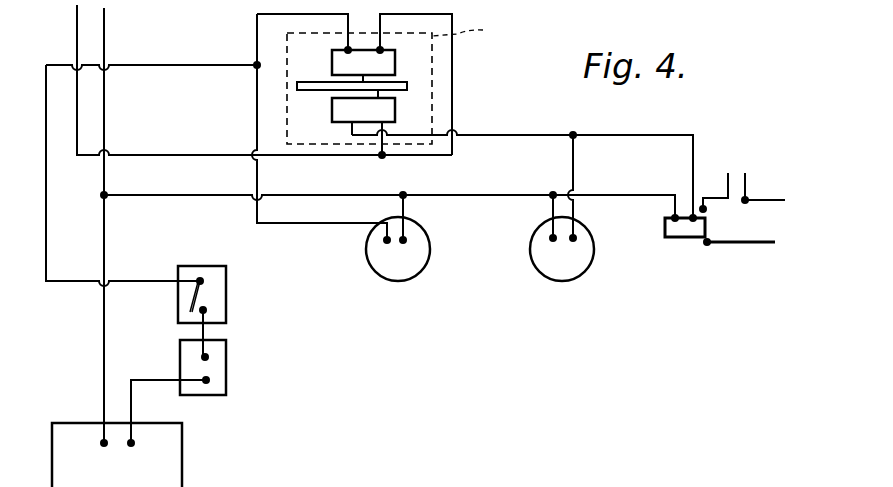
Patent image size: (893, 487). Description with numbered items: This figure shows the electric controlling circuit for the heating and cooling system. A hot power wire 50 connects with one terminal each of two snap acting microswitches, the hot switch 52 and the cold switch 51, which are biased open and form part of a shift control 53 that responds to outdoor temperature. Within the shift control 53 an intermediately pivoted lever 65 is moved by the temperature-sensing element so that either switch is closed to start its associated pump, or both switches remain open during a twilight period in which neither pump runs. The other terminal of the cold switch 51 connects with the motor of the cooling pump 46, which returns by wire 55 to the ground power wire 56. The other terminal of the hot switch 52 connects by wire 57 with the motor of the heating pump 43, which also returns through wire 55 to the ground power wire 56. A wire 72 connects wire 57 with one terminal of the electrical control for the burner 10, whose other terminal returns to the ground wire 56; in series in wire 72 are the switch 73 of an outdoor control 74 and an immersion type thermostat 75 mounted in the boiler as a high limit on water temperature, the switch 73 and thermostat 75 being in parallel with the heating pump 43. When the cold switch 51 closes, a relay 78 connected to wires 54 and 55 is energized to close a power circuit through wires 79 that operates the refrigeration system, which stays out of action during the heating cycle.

The burner 10 is at (180, 471).
The heating pump 43 is at (366, 256).
The cooling pump 46 is at (530, 251).
The hot power wire 50 is at (75, 27).
The cold switch 51 is at (395, 109).
The hot switch 52 is at (395, 63).
The shift control 53 is at (432, 50).
The wire 54 is at (500, 134).
The wire 55 is at (462, 194).
The ground power wire 56 is at (105, 108).
The wire 57 is at (257, 30).
The lever 65 is at (314, 90).
The wire 72 is at (143, 63).
The switch 73 is at (218, 308).
The outdoor control 74 is at (238, 289).
The immersion type thermostat 75 is at (222, 359).
The relay 78 is at (680, 240).
The wires 79 is at (736, 241).